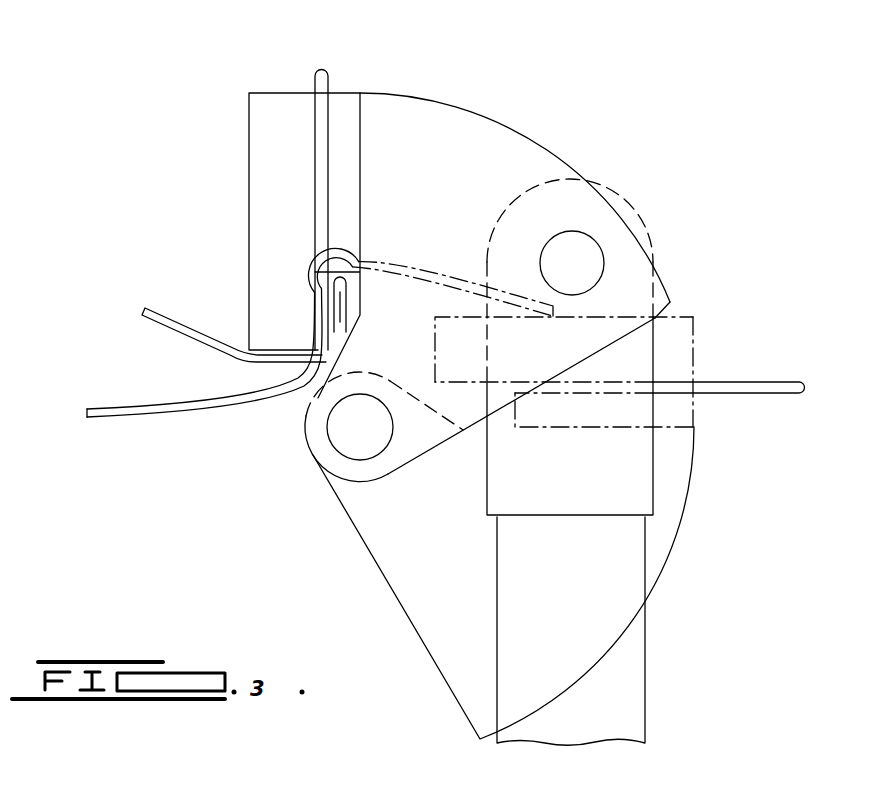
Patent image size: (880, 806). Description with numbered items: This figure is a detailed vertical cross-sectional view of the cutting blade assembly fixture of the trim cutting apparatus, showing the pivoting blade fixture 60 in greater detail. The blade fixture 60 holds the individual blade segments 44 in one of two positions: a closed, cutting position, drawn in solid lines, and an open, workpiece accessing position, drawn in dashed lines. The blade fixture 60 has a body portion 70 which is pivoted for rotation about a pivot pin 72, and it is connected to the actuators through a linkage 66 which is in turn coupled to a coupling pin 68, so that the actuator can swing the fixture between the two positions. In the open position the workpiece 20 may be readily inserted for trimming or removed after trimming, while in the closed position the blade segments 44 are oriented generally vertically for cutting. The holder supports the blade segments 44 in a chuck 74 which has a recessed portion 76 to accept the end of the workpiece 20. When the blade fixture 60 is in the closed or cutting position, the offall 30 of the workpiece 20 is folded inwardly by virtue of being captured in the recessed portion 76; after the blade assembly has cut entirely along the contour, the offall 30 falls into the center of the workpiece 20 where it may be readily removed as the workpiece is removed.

The workpiece 20 is at (188, 408).
The offall 30 is at (165, 312).
The blade segment 44 is at (326, 82).
The blade fixture 60 is at (608, 156).
The linkage 66 is at (630, 684).
The coupling pin 68 is at (596, 265).
The body portion 70 is at (441, 118).
The pivot pin 72 is at (342, 430).
The chuck 74 is at (349, 173).
The recessed portion 76 is at (352, 298).